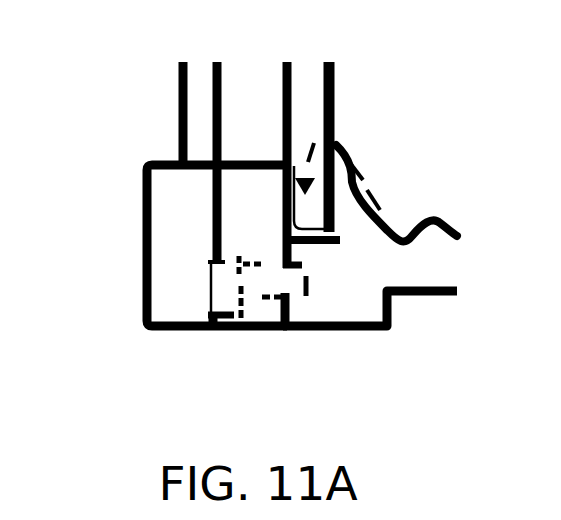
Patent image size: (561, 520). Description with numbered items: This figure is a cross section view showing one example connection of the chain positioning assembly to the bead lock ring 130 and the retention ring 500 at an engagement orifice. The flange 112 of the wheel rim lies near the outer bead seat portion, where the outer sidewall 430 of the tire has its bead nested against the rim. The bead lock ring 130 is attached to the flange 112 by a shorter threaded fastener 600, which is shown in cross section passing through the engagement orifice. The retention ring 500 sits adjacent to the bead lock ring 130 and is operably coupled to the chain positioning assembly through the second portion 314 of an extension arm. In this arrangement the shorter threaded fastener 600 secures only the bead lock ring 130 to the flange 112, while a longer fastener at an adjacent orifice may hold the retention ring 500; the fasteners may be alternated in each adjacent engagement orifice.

The flange 112 is at (332, 308).
The bead lock ring 130 is at (262, 312).
The second portion 314 is at (181, 82).
The outer sidewall 430 is at (317, 77).
The retention ring 500 is at (152, 250).
The shorter threaded fasteners 600 is at (268, 273).